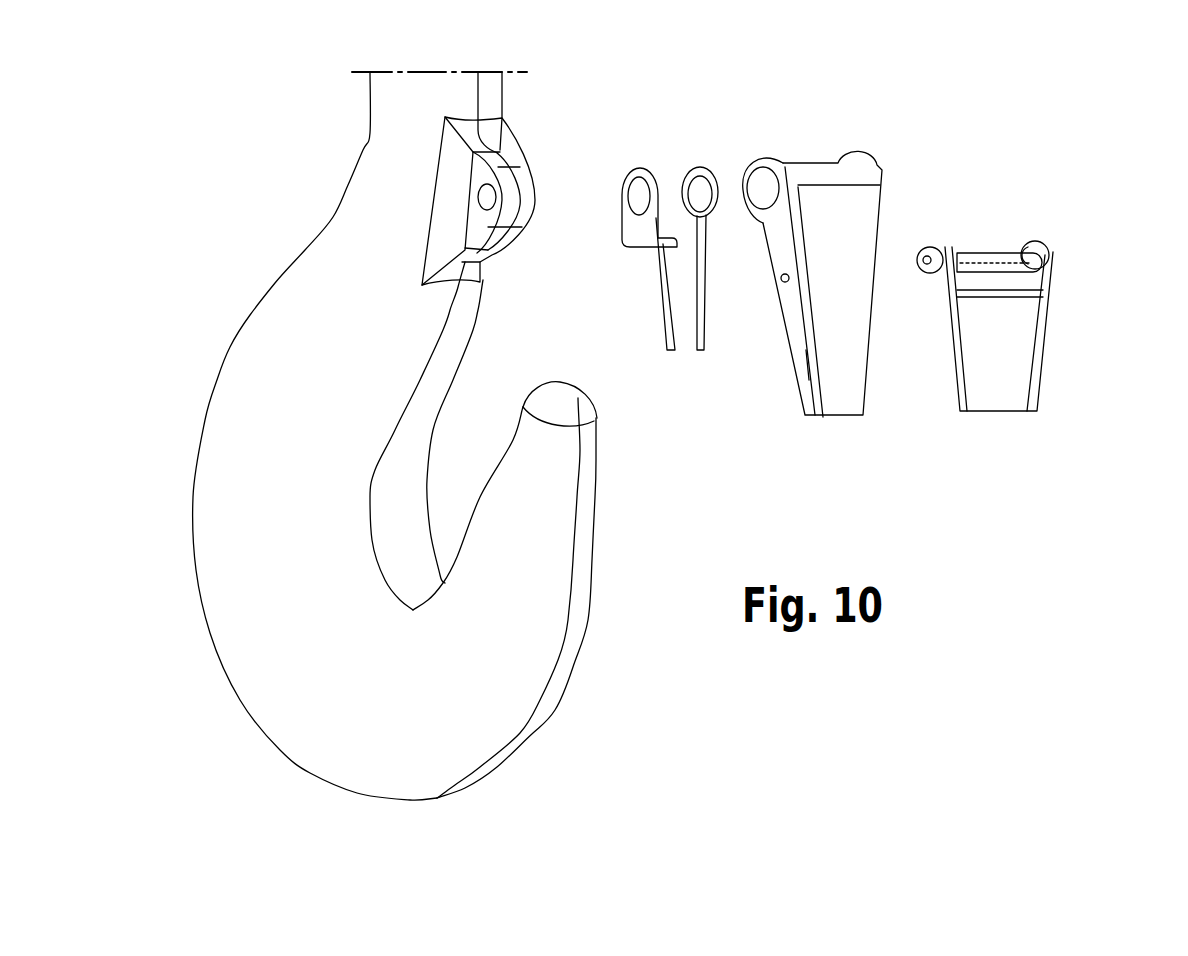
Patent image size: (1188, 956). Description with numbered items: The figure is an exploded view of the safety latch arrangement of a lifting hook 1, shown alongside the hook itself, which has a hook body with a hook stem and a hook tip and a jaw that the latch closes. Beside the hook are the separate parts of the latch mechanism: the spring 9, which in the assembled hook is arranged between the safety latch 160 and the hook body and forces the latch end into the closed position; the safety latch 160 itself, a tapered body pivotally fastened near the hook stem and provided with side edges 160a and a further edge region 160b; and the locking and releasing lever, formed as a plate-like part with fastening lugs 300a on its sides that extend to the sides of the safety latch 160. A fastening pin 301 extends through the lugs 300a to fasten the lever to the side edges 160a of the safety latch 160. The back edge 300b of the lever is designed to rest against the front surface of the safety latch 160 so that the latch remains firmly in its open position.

The lifting hook 1 is at (292, 200).
The spring 9 is at (648, 168).
The safety latch 160 is at (828, 271).
The side edges 160a is at (781, 278).
The latch edge 160b is at (800, 358).
The fastening lugs 300a is at (1043, 240).
The back edge 300b is at (1007, 296).
The fastening pin 301 is at (988, 260).